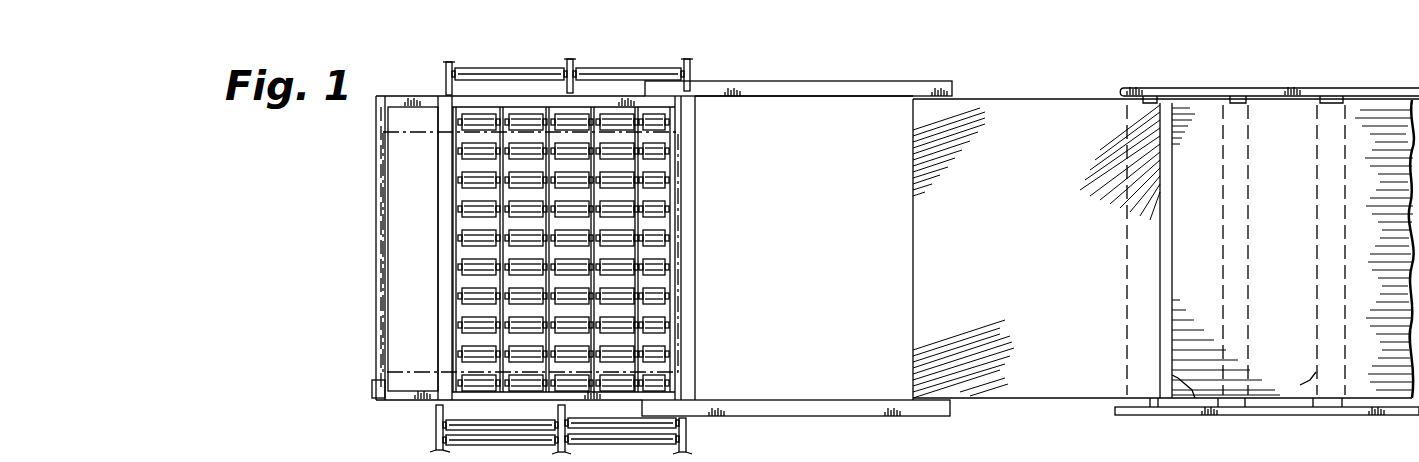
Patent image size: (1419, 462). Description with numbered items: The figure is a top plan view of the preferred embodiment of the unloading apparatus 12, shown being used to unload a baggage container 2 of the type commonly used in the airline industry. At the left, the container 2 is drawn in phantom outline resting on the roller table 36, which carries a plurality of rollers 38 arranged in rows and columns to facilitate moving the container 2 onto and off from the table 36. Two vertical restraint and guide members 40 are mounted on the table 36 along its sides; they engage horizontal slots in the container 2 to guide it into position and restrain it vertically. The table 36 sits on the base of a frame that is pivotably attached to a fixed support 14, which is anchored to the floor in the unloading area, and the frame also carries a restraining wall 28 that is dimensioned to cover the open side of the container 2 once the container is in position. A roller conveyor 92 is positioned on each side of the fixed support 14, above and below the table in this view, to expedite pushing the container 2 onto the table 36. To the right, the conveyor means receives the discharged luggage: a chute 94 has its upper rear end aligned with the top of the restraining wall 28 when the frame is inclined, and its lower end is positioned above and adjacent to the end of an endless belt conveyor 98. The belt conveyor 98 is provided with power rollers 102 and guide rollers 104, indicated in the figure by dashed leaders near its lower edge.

The unloading apparatus 12 is at (340, 211).
The baggage container 2 is at (378, 300).
The fixed support 14 is at (708, 92).
The restraining wall 28 is at (688, 367).
The roller table 36 is at (382, 388).
The rollers 38 is at (668, 238).
The vertical restraint and guide members 40 is at (442, 150).
The roller conveyor 92 is at (447, 76).
The chute 94 is at (1005, 126).
The endless belt conveyor 98 is at (1284, 112).
The power rollers 102 is at (1195, 395).
The guide rollers 104 is at (1315, 378).